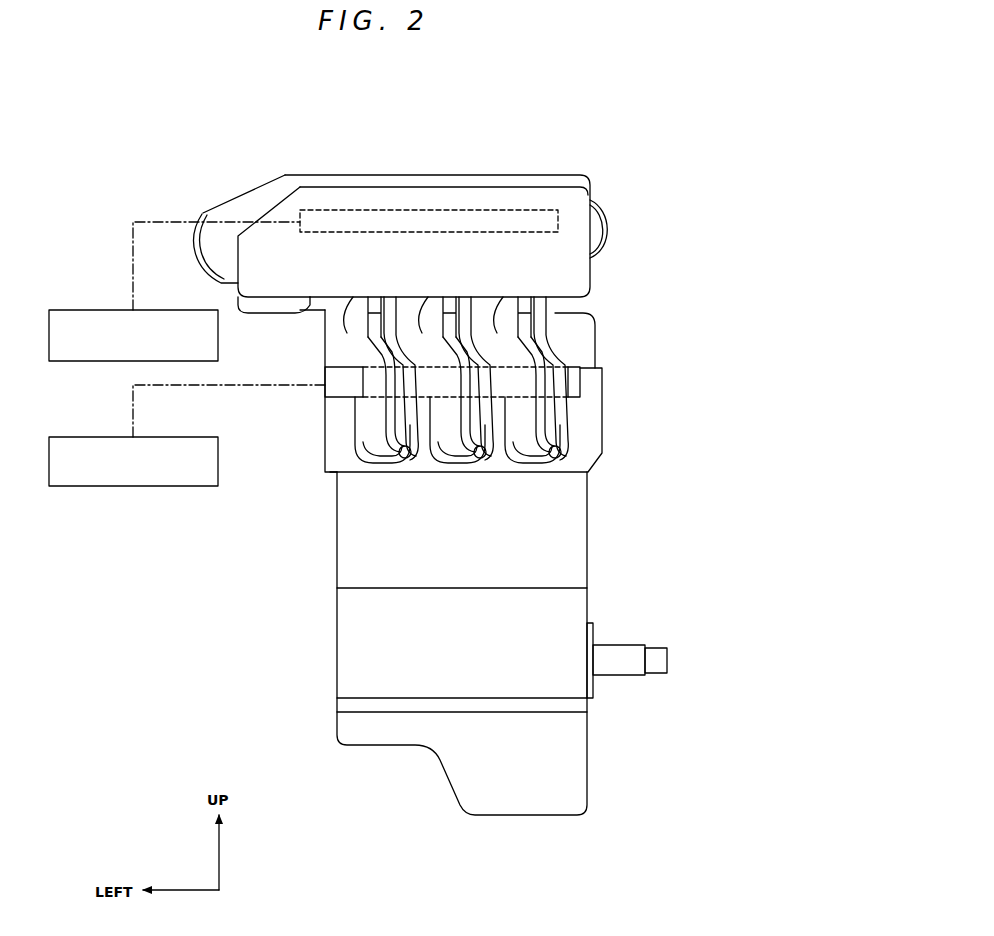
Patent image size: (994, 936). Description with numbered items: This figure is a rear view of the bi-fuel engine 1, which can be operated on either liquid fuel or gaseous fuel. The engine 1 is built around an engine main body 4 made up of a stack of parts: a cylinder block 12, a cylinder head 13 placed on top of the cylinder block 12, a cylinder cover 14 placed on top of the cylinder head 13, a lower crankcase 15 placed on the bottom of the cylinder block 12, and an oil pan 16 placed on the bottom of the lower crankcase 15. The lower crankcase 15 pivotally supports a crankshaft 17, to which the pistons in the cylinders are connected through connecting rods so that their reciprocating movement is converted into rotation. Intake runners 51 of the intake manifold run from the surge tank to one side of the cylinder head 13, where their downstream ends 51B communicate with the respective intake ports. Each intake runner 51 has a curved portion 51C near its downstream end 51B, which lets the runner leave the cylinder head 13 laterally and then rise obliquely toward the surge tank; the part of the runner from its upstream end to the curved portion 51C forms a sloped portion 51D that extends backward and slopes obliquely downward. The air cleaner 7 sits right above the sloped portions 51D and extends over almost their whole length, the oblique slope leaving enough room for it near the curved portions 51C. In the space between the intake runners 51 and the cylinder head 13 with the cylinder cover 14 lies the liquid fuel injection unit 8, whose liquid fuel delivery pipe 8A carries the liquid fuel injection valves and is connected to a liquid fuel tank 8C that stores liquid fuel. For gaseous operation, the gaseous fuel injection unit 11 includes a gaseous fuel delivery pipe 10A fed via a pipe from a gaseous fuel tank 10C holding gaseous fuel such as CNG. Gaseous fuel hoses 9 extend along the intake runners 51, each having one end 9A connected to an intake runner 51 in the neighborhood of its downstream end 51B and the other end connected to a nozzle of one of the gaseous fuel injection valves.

The engine 1 is at (540, 118).
The engine main body 4 is at (604, 506).
The air cleaner 7 is at (337, 178).
The liquid fuel injection unit 8 is at (346, 404).
The liquid fuel delivery pipe 8A is at (345, 397).
The liquid fuel tank 8C is at (98, 436).
The gaseous fuel hose 9 is at (448, 346).
The one end of gaseous fuel hose 9A is at (407, 477).
The gaseous fuel delivery pipe 10A is at (451, 210).
The gaseous fuel tank 10C is at (98, 308).
The gaseous fuel injection unit 11 is at (384, 196).
The cylinder block 12 is at (568, 548).
The cylinder head 13 is at (588, 436).
The cylinder cover 14 is at (586, 321).
The lower crankcase 15 is at (568, 612).
The oil pan 16 is at (563, 755).
The crankshaft 17 is at (622, 672).
The intake runner 51 is at (362, 452).
The downstream end of intake runner 51B is at (378, 483).
The curved portion 51C is at (480, 418).
The sloped portion 51D is at (344, 325).